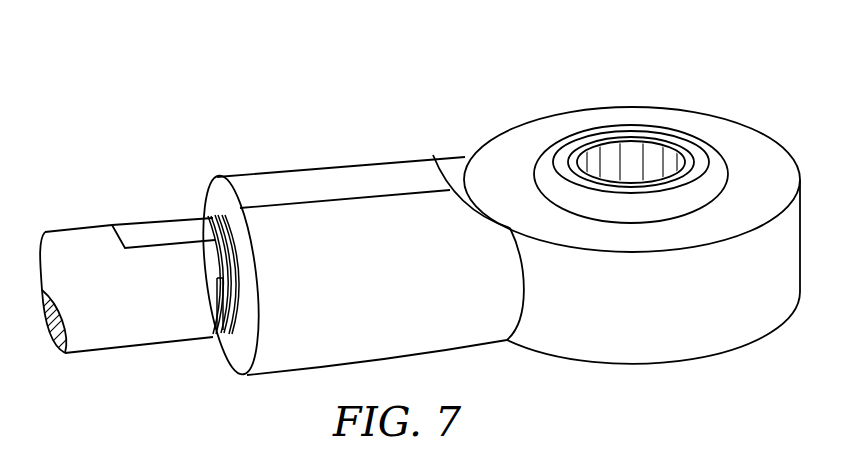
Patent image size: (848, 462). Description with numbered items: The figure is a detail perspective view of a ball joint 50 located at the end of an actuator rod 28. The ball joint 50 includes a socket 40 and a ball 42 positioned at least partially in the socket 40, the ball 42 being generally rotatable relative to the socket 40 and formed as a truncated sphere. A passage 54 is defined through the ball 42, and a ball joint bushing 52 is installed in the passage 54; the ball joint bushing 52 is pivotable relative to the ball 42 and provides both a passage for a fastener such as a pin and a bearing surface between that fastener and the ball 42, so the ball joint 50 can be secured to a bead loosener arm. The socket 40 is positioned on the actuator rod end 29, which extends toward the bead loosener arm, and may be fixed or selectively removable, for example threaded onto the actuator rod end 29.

The rod 28 is at (135, 337).
The actuator rod end 29 is at (207, 332).
The socket 40 is at (505, 147).
The ball 42 is at (712, 175).
The ball joint 50 is at (701, 99).
The ball joint bushing 52 is at (575, 157).
The passage 54 is at (631, 158).